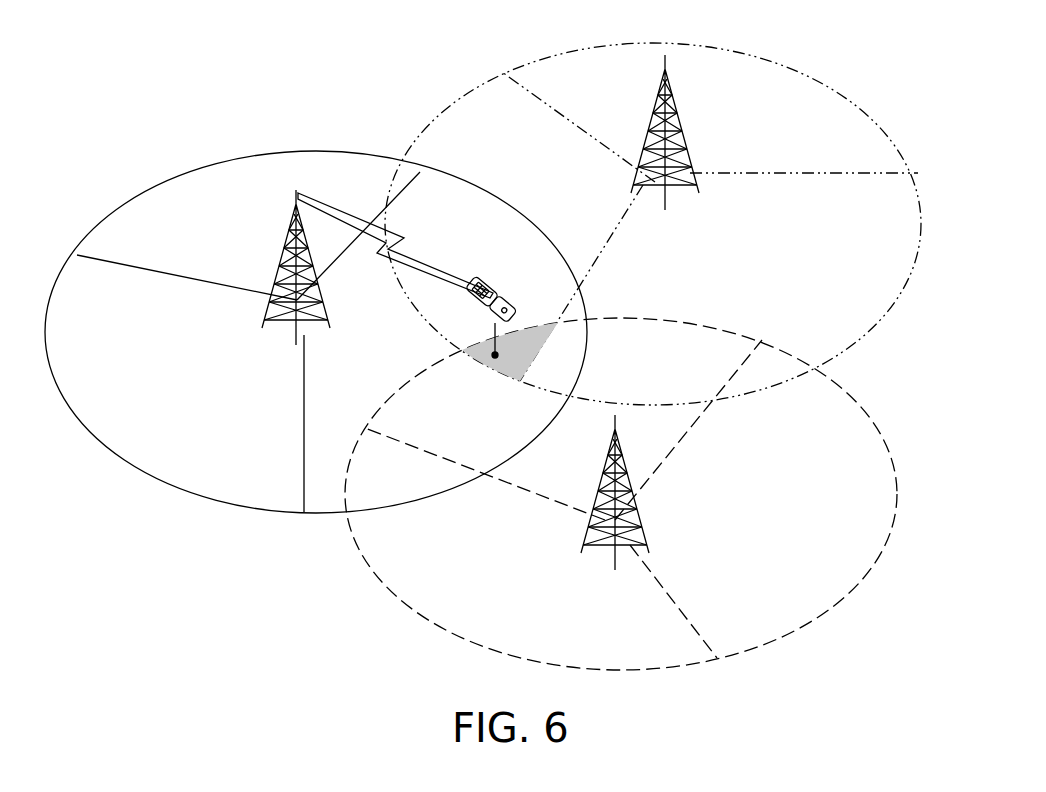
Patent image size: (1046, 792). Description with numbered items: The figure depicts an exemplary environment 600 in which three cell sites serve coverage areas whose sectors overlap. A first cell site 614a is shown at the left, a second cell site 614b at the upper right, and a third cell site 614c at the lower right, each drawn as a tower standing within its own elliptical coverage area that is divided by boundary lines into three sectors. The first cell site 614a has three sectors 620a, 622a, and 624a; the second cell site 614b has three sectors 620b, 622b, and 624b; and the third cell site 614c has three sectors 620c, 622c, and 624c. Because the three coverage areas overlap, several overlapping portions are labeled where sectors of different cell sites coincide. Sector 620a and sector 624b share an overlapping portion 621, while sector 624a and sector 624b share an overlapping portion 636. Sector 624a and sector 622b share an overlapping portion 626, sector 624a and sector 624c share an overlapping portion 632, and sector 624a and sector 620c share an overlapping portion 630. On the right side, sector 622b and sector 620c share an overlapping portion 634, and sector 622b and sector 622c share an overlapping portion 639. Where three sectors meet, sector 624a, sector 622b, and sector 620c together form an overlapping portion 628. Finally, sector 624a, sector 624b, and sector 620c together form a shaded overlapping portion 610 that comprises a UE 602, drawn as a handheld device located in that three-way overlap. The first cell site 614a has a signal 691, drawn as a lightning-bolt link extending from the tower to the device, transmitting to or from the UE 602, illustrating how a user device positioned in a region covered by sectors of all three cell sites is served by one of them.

The exemplary environment 600 is at (90, 88).
The UE 602 is at (503, 283).
The overlapping portion 610 is at (522, 340).
The first cell site 614a is at (278, 253).
The second cell site 614b is at (655, 106).
The third cell site 614c is at (604, 470).
The sector 620a is at (205, 165).
The sector 620b is at (764, 57).
The sector 620c is at (689, 322).
The overlapping portion 621 is at (387, 176).
The sector 622a is at (120, 460).
The sector 622b is at (892, 308).
The sector 622c is at (887, 437).
The sector 624a is at (324, 514).
The sector 624b is at (435, 111).
The sector 624c is at (389, 592).
The overlapping portion 626 is at (586, 314).
The overlapping portion 628 is at (575, 371).
The overlapping portion 630 is at (485, 429).
The overlapping portion 632 is at (405, 479).
The overlapping portion 634 is at (660, 367).
The overlapping portion 636 is at (492, 224).
The overlapping portion 639 is at (787, 374).
The signal 691 is at (422, 262).